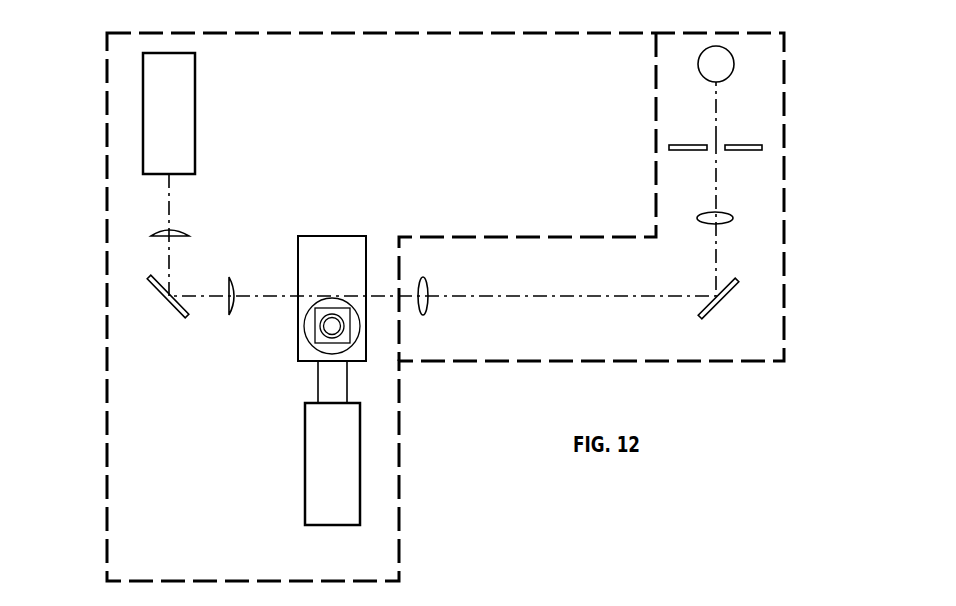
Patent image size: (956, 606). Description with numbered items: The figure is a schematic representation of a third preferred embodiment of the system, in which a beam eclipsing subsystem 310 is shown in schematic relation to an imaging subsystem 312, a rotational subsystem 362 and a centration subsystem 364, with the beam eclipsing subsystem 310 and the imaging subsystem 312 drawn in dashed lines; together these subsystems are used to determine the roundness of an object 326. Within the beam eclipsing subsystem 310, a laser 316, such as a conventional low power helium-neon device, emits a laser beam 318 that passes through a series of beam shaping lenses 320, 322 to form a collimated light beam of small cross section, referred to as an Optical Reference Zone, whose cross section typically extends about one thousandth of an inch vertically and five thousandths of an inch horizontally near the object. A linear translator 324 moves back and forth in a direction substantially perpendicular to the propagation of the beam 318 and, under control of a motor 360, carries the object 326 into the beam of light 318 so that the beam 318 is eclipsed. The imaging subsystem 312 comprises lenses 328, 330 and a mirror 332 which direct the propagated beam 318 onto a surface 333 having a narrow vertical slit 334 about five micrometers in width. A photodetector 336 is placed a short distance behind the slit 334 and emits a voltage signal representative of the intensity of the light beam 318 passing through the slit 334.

The beam eclipsing subsystem 310 is at (470, 33).
The imaging subsystem 312 is at (785, 257).
The laser 316 is at (145, 98).
The laser beam 318 is at (166, 206).
The beam shaping lens 320 is at (151, 235).
The beam shaping lens 322 is at (226, 308).
The linear translator 324 is at (328, 240).
The object 326 is at (340, 330).
The lens 328 is at (430, 290).
The lens 330 is at (735, 214).
The mirror 332 is at (730, 292).
The surface 333 is at (752, 150).
The vertical slit 334 is at (712, 143).
The photodetector 336 is at (735, 67).
The motor 360 is at (308, 480).
The rotational subsystem 362 is at (305, 333).
The centration subsystem 364 is at (315, 343).